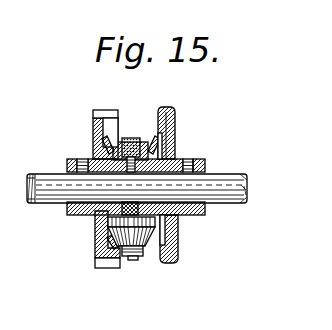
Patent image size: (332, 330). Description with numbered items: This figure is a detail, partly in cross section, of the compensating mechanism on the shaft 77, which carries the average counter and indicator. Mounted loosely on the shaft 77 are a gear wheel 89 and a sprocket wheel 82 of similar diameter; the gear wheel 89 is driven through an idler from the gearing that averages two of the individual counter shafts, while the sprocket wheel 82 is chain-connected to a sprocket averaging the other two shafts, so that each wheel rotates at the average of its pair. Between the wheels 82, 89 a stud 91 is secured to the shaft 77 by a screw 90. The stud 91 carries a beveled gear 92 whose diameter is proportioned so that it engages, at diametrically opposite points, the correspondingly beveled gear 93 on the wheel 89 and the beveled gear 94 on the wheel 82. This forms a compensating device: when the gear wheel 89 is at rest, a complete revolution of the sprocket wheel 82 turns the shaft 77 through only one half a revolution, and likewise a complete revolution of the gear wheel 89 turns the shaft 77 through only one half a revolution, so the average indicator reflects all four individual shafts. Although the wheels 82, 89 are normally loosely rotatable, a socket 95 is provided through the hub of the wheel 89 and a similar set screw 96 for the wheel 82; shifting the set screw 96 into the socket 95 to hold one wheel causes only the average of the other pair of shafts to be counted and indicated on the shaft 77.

The shaft 77 is at (249, 182).
The sprocket wheel 82 is at (174, 111).
The gear wheel 89 is at (93, 113).
The screw 90 is at (134, 137).
The stud 91 is at (138, 260).
The beveled gear 92 is at (97, 236).
The beveled gear 93 is at (118, 140).
The beveled gear 94 is at (151, 140).
The socket 95 is at (74, 159).
The set screw 96 is at (192, 159).